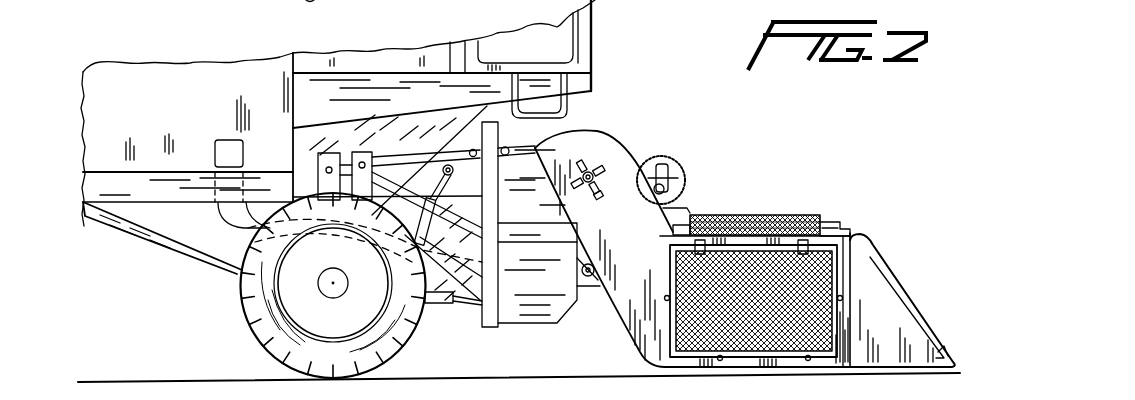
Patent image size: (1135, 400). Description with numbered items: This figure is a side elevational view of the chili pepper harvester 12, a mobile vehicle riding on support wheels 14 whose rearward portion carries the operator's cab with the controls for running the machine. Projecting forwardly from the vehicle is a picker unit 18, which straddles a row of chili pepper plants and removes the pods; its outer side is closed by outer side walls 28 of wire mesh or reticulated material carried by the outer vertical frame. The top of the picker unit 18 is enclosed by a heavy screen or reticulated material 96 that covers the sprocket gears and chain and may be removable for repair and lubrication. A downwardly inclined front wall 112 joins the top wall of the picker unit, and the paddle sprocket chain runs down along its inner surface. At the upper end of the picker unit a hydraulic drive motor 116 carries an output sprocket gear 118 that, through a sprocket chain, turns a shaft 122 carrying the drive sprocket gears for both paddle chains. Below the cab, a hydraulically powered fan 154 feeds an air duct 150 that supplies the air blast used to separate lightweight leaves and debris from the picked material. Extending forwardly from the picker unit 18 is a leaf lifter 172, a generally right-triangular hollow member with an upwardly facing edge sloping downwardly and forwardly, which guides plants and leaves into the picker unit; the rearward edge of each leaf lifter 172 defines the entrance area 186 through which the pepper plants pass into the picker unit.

The chili pepper harvester 12 is at (629, 75).
The support wheels 14 is at (256, 336).
The picker units 18 is at (789, 203).
The outer side walls 28 is at (677, 330).
The reticulated material 96 is at (746, 215).
The downwardly inclined front wall 112 is at (598, 132).
The hydraulic drive motor 116 is at (686, 186).
The output sprocket gear 118 is at (672, 163).
The shaft 122 is at (600, 163).
The air duct 150 is at (216, 257).
The fan 154 is at (215, 140).
The leaf lifters 172 is at (885, 251).
The entrance area 186 is at (288, 7).